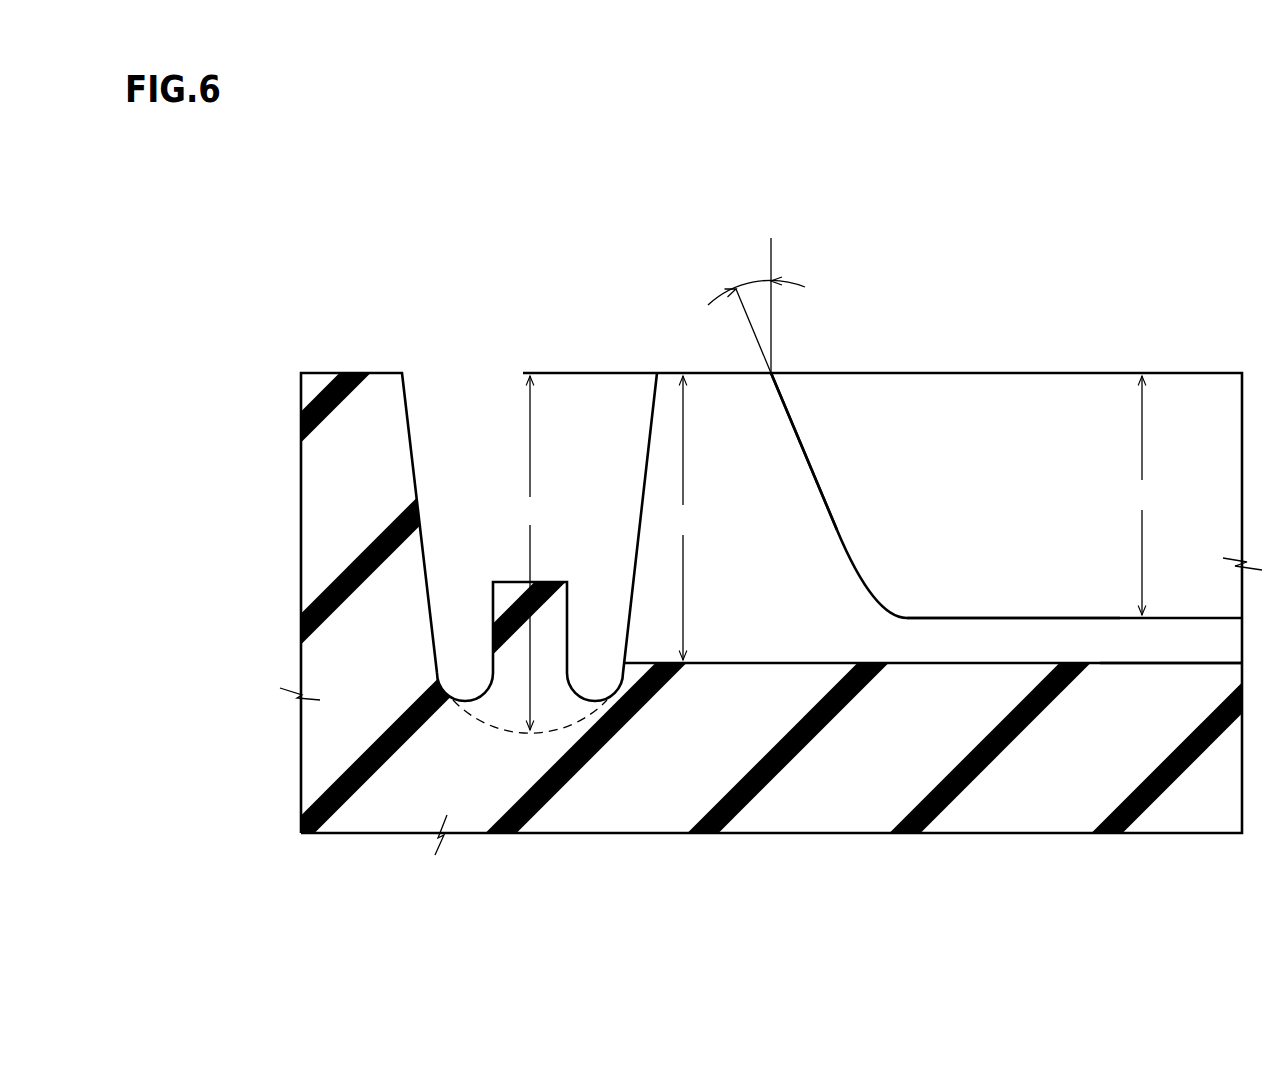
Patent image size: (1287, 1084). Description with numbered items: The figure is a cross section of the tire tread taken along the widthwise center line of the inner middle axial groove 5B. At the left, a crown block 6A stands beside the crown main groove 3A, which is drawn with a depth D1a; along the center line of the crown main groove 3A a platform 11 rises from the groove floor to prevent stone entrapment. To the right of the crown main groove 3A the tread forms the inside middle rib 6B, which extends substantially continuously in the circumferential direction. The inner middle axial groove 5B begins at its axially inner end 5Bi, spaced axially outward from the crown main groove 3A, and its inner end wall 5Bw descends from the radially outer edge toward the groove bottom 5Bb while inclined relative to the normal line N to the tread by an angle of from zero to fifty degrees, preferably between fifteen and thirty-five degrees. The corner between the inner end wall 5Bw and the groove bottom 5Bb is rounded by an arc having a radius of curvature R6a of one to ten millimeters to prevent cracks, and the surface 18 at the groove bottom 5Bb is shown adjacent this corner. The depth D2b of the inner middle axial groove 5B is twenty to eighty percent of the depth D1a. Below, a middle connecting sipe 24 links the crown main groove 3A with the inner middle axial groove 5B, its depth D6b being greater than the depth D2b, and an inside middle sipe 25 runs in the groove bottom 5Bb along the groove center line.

The crown block 6A is at (348, 370).
The crown main groove 3A is at (475, 415).
The platform 11 is at (510, 580).
The inside middle rib 6B is at (945, 370).
The axially inner end 5Bi is at (768, 372).
The normal line N is at (773, 263).
The radius of curvature R6a is at (912, 552).
The inner middle axial groove 5B is at (1075, 412).
The middle connecting sipe 24 is at (747, 663).
The inner end wall 5Bw is at (797, 437).
The groove bottom surface 18 is at (893, 618).
The groove bottom 5Bb is at (1077, 618).
The inside middle sipe 25 is at (1203, 663).
The depth of the crown main groove D1a is at (532, 553).
The depth of the middle connecting sipe D6b is at (683, 518).
The depth of the inner middle axial groove D2b is at (1142, 495).